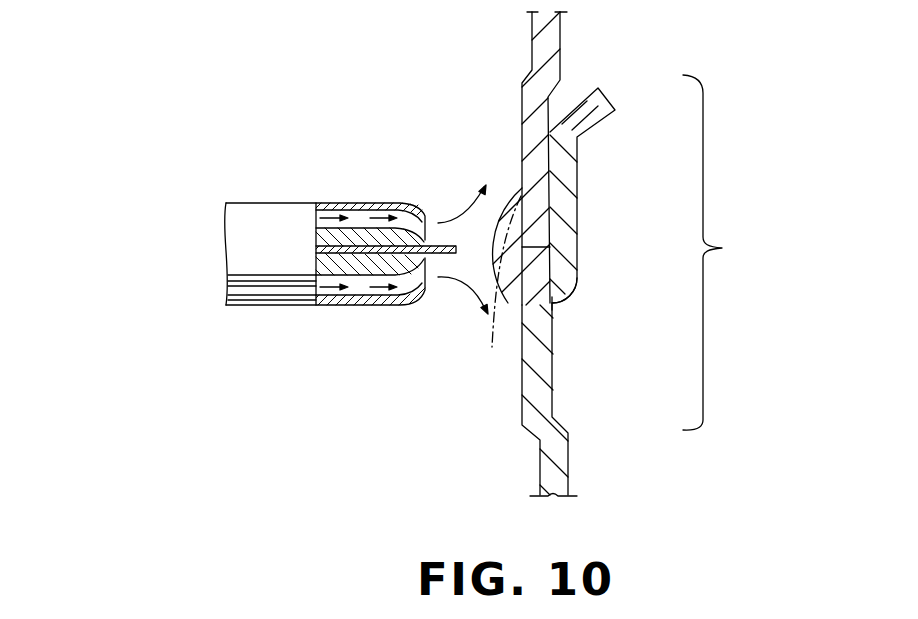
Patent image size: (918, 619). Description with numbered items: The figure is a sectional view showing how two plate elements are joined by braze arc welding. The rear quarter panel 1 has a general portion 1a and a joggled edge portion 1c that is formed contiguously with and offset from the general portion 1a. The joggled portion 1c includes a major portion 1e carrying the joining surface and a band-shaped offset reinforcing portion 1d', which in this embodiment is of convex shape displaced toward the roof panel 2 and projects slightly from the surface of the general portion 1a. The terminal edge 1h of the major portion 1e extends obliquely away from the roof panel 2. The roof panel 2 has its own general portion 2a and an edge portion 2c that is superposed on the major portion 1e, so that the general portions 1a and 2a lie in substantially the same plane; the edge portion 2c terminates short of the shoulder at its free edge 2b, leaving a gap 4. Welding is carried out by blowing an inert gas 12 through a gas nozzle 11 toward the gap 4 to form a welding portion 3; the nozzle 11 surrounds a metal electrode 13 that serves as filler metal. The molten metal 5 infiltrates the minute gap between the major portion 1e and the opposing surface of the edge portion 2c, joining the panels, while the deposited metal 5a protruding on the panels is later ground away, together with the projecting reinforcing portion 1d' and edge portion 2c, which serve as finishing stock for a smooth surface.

The rear quarter panel 1 is at (606, 370).
The general portion 1a is at (549, 466).
The edge portion (joggled portion) 1c is at (724, 252).
The band-shaped offset reinforcing portion 1d' is at (522, 373).
The major portion 1e is at (568, 173).
The terminal edge 1h is at (608, 97).
The roof panel 2 is at (503, 57).
The general portion 2a is at (548, 38).
The free edge 2b is at (532, 250).
The edge portion 2c is at (530, 132).
The welding portion 3 is at (470, 315).
The gap 4 is at (557, 303).
The molten metal (padding of weld) 5 is at (542, 267).
The deposited metal 5a is at (497, 287).
The gas nozzle 11 is at (291, 200).
The inert gas 12 is at (335, 203).
The metal electrode 13 is at (373, 250).